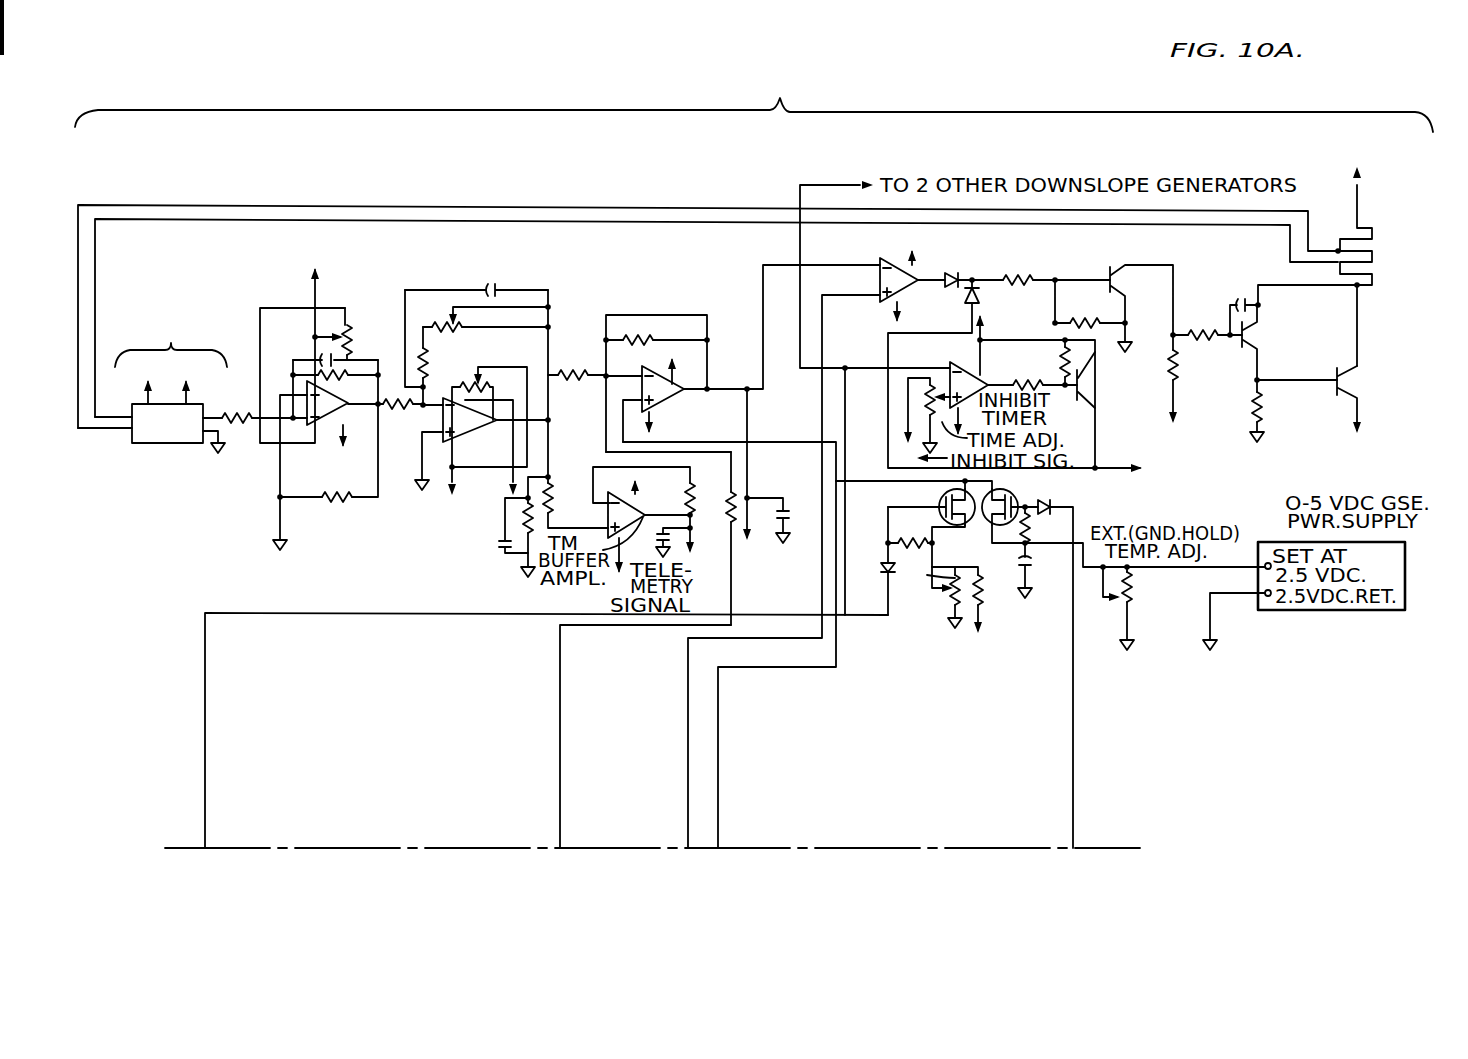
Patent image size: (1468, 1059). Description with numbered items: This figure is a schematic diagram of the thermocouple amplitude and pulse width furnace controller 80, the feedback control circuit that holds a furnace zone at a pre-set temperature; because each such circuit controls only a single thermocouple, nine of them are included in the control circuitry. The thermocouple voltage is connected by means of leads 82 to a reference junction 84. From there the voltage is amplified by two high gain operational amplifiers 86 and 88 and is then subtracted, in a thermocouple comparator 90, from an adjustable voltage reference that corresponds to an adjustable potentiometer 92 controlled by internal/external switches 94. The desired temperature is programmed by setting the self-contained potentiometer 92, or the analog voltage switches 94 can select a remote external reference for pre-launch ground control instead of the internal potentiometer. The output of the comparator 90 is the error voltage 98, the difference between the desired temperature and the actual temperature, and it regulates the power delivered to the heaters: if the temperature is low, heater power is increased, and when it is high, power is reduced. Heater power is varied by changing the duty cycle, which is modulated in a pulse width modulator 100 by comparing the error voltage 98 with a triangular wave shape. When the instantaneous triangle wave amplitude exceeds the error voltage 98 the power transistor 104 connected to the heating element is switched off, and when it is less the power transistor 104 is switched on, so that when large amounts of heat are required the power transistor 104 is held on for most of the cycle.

The thermocouple amplitude and pulse width furnace controller 80 is at (754, 85).
The leads 82 is at (1305, 213).
The reference junction 84 is at (181, 428).
The high gain operational amplifier 86 is at (330, 408).
The high gain operational amplifier 88 is at (482, 413).
The thermocouple comparator 90 is at (672, 389).
The adjustable potentiometer 92 is at (958, 595).
The internal/external switches 94 is at (945, 494).
The error voltage 98 is at (747, 388).
The pulse width modulator 100 is at (880, 278).
The power transistor 104 is at (1350, 375).